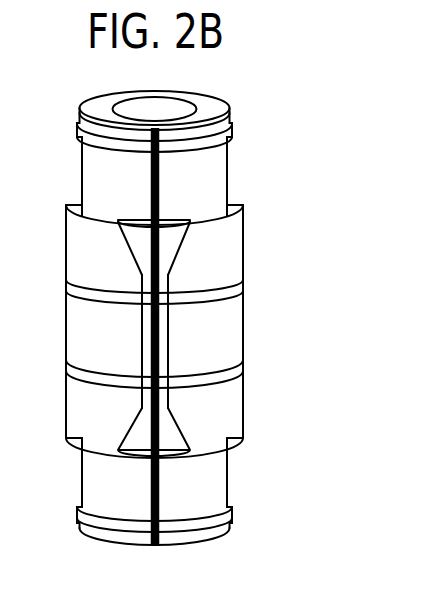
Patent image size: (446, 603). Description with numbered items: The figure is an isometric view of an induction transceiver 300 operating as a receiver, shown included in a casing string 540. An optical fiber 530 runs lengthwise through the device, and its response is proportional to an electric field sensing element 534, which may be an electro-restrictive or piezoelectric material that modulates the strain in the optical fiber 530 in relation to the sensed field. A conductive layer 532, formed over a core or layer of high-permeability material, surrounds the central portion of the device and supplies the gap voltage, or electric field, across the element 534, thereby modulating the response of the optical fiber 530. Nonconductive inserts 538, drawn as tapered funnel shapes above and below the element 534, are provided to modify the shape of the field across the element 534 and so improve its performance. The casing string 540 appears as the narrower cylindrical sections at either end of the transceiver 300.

The induction transceiver 300 is at (300, 289).
The optical fiber 530 is at (159, 171).
The conductive layer 532 is at (65, 241).
The electric field sensing element 534 is at (142, 338).
The nonconductive inserts 538 is at (131, 253).
The casing string 540 is at (228, 152).